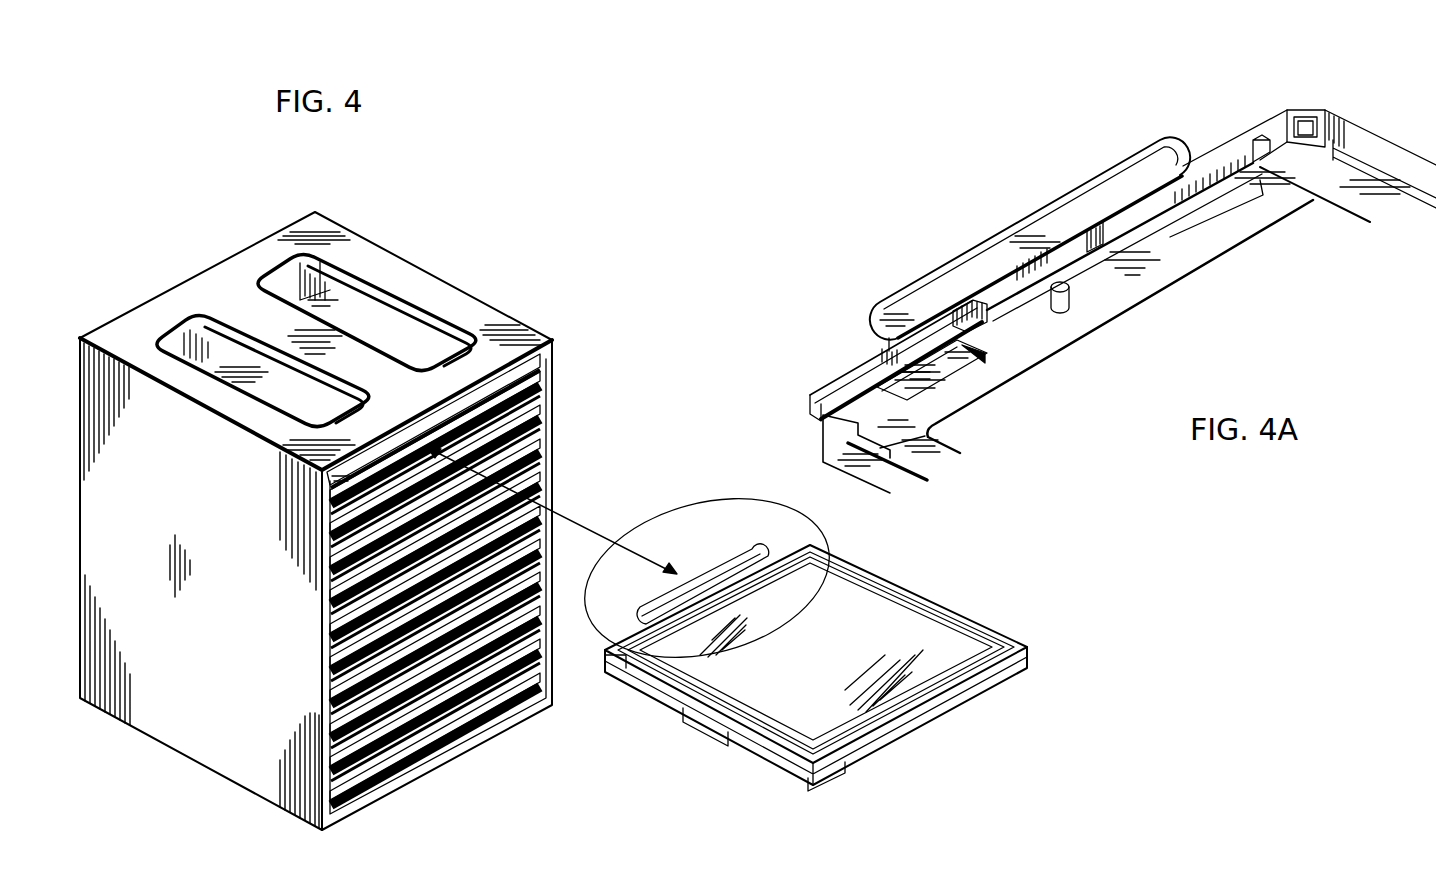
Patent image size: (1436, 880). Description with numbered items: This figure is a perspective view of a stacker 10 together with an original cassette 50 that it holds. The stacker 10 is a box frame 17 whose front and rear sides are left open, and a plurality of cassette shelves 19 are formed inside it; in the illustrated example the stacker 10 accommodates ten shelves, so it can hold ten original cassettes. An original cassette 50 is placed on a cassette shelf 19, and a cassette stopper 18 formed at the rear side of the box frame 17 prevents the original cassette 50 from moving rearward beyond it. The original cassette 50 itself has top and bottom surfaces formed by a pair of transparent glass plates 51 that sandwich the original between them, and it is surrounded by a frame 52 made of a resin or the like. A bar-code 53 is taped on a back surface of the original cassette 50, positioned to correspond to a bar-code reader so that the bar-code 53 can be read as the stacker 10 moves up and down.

In FIG. 4, the stacker 10 is at (400, 254).
In FIG. 4, the box frame 17 is at (483, 321).
In FIG. 4, the cassette stopper 18 is at (308, 280).
In FIG. 4, the cassette shelf 19 is at (547, 390).
In FIG. 4, the original cassette 50 is at (818, 652).
In FIG. 4, the transparent glass plates 51 is at (915, 620).
In FIG. 4, the frame 52 is at (907, 722).
In FIG. 4A, the bar-code 53 is at (1157, 200).